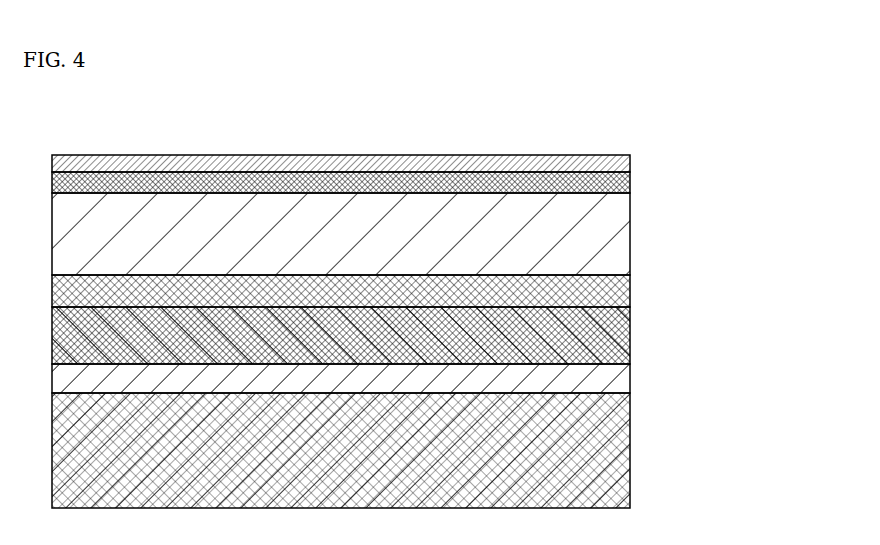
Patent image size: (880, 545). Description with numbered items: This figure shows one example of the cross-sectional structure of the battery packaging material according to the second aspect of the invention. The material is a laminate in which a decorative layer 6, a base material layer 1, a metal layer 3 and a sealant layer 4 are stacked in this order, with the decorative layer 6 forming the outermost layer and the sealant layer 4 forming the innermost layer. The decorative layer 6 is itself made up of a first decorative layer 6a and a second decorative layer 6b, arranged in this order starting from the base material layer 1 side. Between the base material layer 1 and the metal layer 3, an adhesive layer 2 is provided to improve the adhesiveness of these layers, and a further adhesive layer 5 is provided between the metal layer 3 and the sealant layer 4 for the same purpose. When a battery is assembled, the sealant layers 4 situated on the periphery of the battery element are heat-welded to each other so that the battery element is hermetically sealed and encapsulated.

The base material layer 1 is at (630, 235).
The adhesive layer 2 is at (630, 293).
The metal layer 3 is at (630, 340).
The sealant layer 4 is at (630, 462).
The adhesive layer 5 is at (630, 385).
The decorative layer 6 is at (424, 144).
The first decorative layer 6a is at (630, 191).
The second decorative layer 6b is at (630, 168).